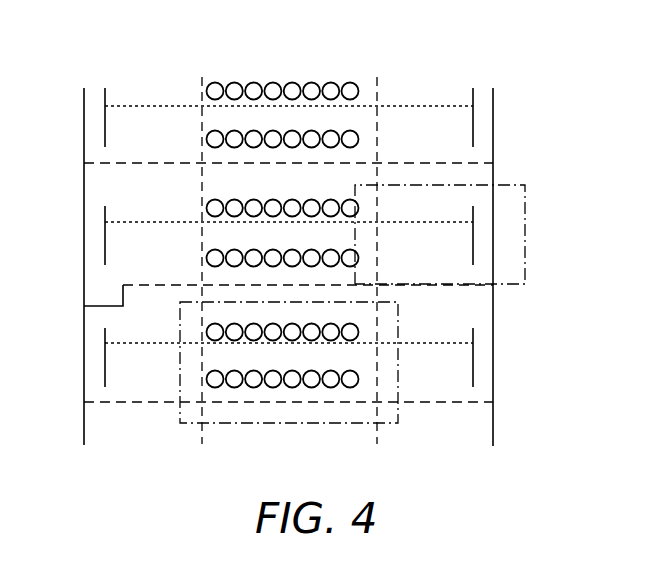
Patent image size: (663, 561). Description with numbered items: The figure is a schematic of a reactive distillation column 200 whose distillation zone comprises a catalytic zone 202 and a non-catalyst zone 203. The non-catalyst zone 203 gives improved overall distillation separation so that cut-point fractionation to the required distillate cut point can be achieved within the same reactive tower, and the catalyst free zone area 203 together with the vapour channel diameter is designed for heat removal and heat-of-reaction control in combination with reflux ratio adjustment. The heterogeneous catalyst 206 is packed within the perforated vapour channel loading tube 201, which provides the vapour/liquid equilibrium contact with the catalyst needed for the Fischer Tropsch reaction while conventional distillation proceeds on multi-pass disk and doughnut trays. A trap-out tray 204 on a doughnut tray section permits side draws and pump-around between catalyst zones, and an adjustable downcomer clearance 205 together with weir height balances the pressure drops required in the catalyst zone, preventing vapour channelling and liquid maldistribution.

The column 200 is at (493, 98).
The perforated vapour channel loading tube 201 is at (377, 76).
The catalytic zone 202 is at (290, 423).
The non-catalyst zone 203 is at (525, 258).
The trap-out tray 204 is at (84, 306).
The adjustable downcomer clearance 205 is at (105, 133).
The heterogeneous catalyst 206 is at (231, 83).